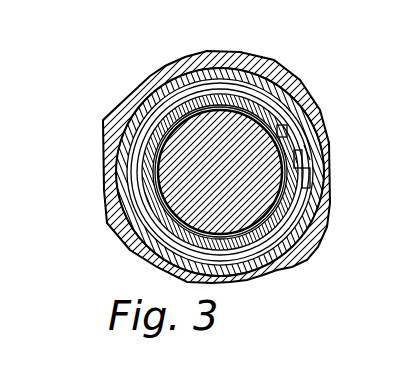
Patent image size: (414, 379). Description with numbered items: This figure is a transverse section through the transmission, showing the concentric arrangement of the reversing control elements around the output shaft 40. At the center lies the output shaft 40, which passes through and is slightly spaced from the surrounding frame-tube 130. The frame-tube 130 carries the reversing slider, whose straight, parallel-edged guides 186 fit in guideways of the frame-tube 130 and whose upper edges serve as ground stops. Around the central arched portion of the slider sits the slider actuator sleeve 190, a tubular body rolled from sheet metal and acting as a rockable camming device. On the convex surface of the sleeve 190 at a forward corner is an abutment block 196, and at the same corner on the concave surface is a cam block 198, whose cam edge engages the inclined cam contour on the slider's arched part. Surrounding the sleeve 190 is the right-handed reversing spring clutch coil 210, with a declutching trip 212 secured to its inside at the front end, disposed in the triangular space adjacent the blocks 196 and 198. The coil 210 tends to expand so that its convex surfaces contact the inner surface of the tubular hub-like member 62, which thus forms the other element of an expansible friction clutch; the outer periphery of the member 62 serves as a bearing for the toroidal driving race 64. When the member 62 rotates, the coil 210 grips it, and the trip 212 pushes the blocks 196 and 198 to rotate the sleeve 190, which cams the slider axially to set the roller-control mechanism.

The output shaft 40 is at (175, 168).
The tubular hub-like member 62 is at (157, 98).
The toroidal driving race 64 is at (197, 65).
The frame-tube 130 is at (150, 147).
The guides 186 is at (143, 195).
The slider actuator sleeve 190 is at (239, 92).
The abutment block 196 is at (284, 133).
The cam block 198 is at (299, 160).
The spring clutch coil 210 is at (307, 177).
The declutching trip 212 is at (307, 152).